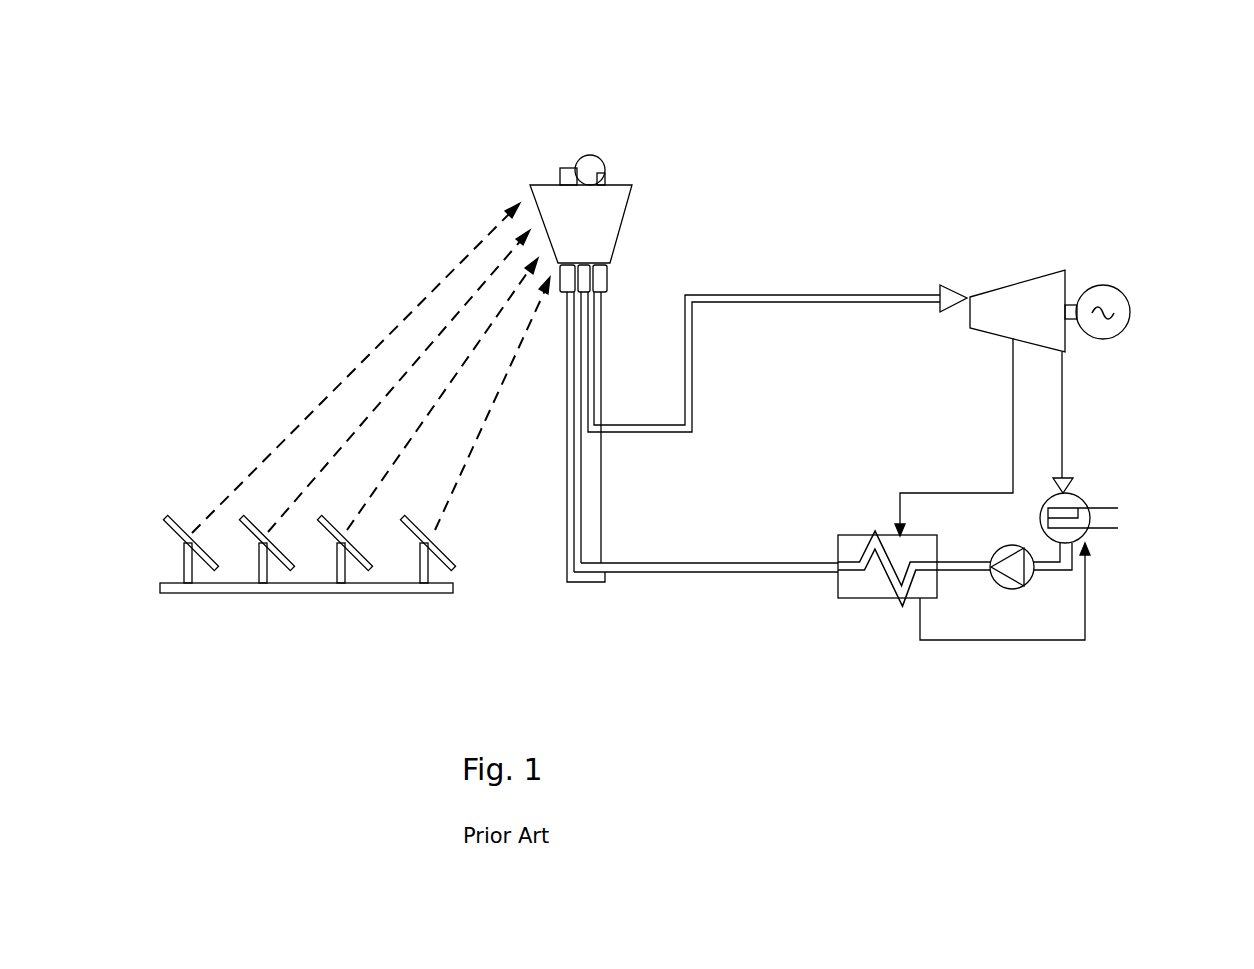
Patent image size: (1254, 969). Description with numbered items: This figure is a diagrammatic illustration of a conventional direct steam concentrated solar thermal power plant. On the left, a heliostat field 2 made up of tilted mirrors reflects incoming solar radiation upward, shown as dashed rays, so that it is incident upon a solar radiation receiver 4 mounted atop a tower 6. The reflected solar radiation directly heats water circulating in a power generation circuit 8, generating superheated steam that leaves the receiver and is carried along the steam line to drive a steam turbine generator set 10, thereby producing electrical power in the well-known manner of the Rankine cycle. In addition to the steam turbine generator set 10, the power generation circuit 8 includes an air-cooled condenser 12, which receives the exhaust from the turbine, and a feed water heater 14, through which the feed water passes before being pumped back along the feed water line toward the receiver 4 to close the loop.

The heliostat field 2 is at (240, 456).
The solar radiation receiver 4 is at (540, 185).
The tower 6 is at (567, 513).
The power generation circuit 8 is at (810, 577).
The steam turbine generator set 10 is at (1076, 243).
The air-cooled condenser 12 is at (1080, 498).
The feed water heater 14 is at (890, 598).